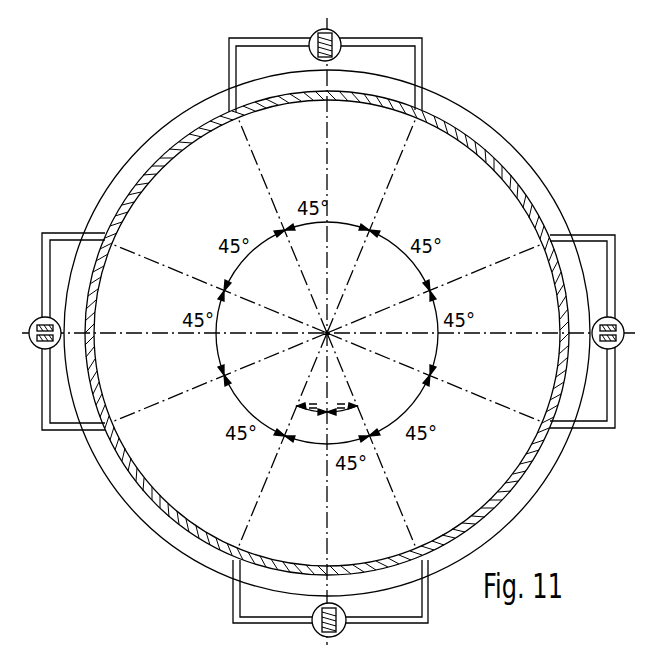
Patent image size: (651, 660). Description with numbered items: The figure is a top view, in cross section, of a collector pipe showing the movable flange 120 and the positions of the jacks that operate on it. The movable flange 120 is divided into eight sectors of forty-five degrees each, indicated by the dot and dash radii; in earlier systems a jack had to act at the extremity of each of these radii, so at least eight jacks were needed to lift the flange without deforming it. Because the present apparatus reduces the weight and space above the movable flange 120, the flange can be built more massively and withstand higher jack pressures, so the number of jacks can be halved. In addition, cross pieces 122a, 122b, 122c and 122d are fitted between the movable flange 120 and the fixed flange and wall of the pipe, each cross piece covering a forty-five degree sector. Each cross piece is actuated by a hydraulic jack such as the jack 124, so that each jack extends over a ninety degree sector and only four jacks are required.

The movable flange 120 is at (133, 170).
The cross piece 122a is at (234, 598).
The cross piece 122b is at (84, 364).
The cross piece 122c is at (425, 68).
The cross piece 122d is at (583, 235).
The hydraulic jack 124 is at (56, 322).